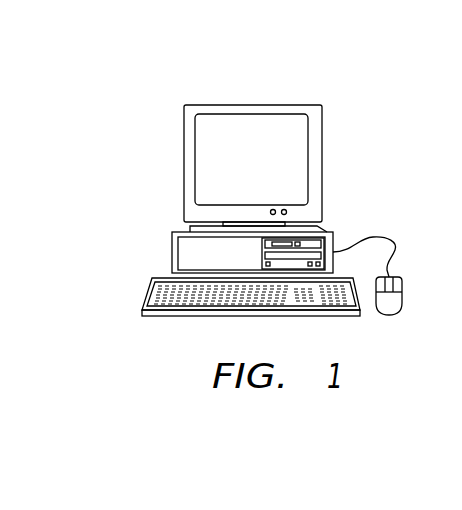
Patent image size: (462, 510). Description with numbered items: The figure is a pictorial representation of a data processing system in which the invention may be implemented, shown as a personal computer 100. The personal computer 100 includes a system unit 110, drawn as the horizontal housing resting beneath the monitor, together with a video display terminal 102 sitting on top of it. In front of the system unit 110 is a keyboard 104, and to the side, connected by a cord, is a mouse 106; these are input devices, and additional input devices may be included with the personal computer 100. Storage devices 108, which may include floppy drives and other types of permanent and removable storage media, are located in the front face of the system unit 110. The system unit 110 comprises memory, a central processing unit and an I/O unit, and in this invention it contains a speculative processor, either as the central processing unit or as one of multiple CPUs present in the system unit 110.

The personal computer 100 is at (230, 74).
The video display terminal 102 is at (199, 163).
The keyboard 104 is at (167, 297).
The mouse 106 is at (388, 314).
The storage devices 108 is at (328, 242).
The system unit 110 is at (172, 254).